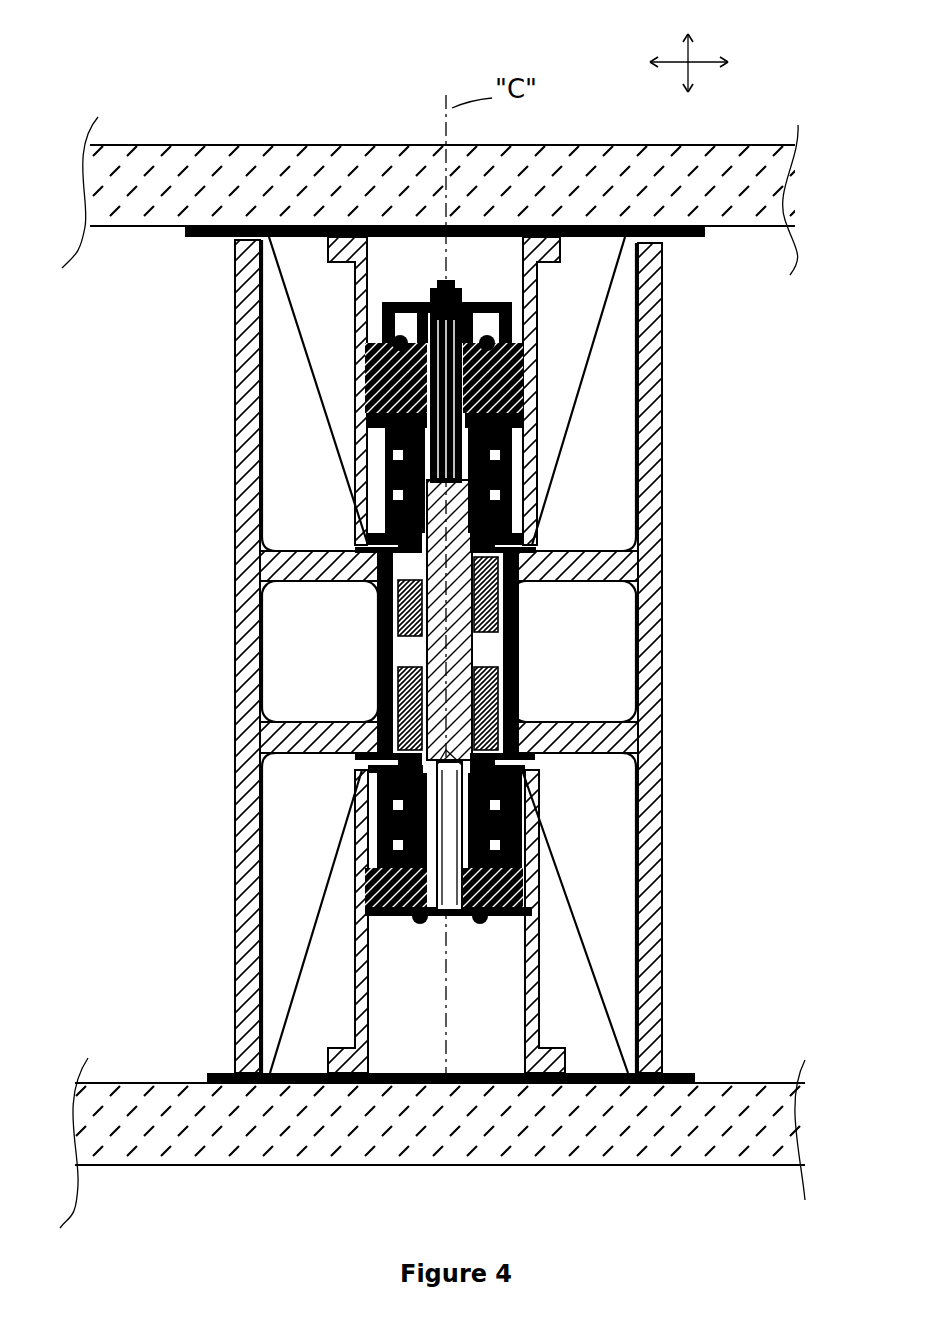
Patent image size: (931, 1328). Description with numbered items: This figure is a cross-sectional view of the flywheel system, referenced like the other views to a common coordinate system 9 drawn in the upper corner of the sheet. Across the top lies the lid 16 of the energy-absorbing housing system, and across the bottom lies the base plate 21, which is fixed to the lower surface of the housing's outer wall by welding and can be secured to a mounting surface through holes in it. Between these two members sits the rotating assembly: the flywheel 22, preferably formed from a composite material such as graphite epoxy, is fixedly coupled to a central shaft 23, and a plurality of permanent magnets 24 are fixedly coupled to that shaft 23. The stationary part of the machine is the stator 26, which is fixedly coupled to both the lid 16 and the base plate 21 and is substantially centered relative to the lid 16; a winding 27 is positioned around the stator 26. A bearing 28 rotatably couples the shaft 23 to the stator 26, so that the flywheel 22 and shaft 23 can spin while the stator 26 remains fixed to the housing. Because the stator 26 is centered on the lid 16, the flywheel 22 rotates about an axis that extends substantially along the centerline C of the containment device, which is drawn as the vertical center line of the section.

The coordinate system 9 is at (724, 10).
The lid 16 is at (240, 152).
The base plate 21 is at (168, 1160).
The flywheel 22 is at (250, 437).
The shaft 23 is at (520, 627).
The permanent magnets 24 is at (520, 600).
The stator 26 is at (340, 258).
The winding 27 is at (452, 604).
The bearing 28 is at (357, 513).